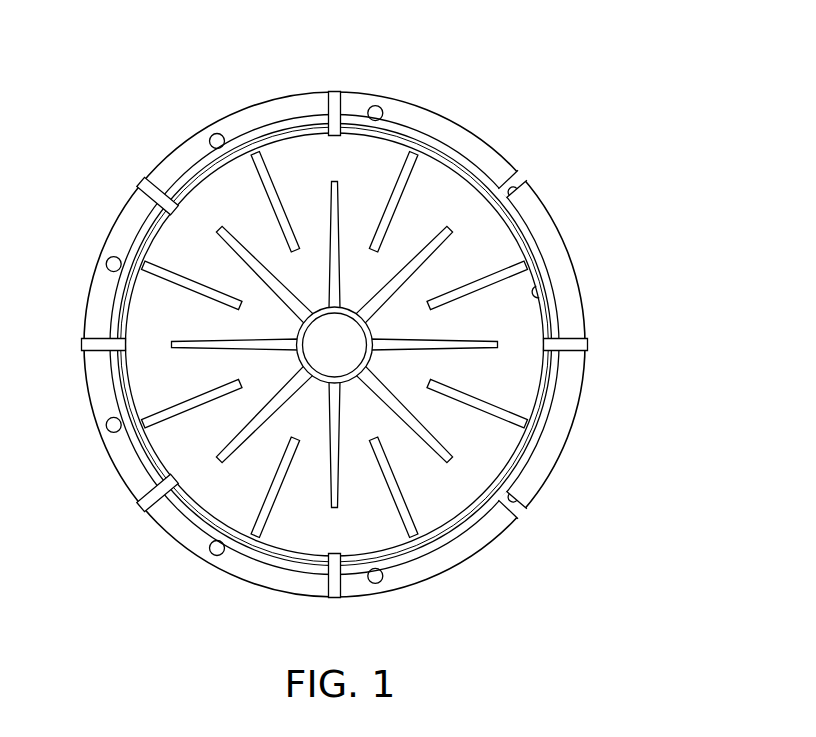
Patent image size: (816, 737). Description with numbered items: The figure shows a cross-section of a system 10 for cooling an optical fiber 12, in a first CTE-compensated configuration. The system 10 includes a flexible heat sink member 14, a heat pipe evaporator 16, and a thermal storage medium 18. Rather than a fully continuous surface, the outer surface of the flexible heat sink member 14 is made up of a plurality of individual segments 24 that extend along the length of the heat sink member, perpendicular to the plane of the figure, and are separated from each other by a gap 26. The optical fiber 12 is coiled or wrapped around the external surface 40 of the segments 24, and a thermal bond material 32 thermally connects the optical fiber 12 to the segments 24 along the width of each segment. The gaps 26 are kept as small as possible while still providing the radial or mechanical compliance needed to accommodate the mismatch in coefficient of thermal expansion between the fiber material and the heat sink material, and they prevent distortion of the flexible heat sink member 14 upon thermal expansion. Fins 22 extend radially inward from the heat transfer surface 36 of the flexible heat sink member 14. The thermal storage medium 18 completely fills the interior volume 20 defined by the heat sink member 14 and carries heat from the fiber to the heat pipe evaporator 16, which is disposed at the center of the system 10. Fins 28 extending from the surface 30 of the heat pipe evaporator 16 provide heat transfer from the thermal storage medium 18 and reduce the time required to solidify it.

The system 10 is at (341, 307).
The optical fiber 12 is at (570, 346).
The flexible heat sink member 14 is at (552, 445).
The heat pipe evaporator 16 is at (343, 328).
The thermal storage medium 18 is at (425, 195).
The interior volume 20 is at (300, 177).
The fins 22 is at (92, 340).
The segments 24 is at (213, 123).
The gap 26 is at (334, 88).
The fins 28 is at (238, 262).
The surface 30 is at (356, 395).
The thermal bond material 32 is at (547, 393).
The surface 36 is at (543, 297).
The external surface 40 is at (532, 492).